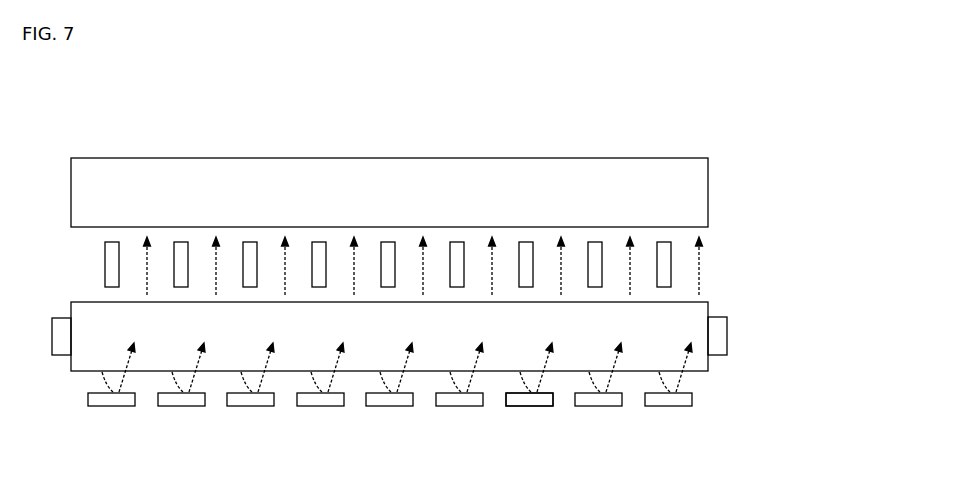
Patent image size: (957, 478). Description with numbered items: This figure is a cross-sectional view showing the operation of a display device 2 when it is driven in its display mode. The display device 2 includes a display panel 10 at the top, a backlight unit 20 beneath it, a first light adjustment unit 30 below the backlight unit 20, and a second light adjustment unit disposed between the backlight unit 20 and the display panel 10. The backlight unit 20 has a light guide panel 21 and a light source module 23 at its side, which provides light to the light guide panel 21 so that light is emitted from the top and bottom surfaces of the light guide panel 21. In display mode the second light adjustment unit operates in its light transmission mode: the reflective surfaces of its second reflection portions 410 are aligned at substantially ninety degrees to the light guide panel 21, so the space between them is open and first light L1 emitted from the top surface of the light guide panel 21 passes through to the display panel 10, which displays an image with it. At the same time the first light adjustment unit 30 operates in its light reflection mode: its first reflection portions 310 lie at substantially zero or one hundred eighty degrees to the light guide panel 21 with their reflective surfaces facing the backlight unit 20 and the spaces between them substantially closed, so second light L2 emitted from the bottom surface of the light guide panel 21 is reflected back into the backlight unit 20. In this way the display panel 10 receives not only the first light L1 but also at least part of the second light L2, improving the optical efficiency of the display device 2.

The display device 2 is at (92, 133).
The display panel 10 is at (705, 196).
The second reflection portions 410 is at (668, 257).
The first light L1 is at (146, 265).
The backlight unit 20 is at (438, 320).
The light guide panel 21 is at (644, 308).
The light source module 23 is at (722, 336).
The first light adjustment unit 30 is at (699, 398).
The first reflection portions 310 is at (530, 406).
The second light L2 is at (101, 373).